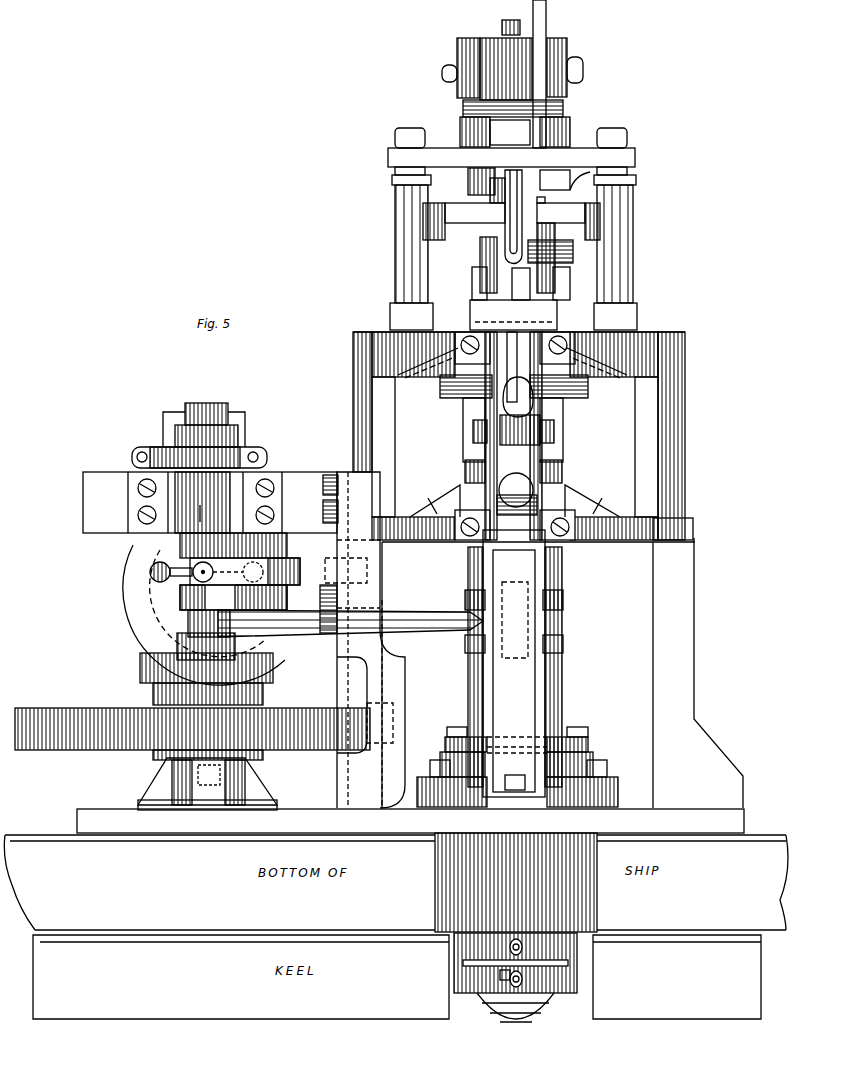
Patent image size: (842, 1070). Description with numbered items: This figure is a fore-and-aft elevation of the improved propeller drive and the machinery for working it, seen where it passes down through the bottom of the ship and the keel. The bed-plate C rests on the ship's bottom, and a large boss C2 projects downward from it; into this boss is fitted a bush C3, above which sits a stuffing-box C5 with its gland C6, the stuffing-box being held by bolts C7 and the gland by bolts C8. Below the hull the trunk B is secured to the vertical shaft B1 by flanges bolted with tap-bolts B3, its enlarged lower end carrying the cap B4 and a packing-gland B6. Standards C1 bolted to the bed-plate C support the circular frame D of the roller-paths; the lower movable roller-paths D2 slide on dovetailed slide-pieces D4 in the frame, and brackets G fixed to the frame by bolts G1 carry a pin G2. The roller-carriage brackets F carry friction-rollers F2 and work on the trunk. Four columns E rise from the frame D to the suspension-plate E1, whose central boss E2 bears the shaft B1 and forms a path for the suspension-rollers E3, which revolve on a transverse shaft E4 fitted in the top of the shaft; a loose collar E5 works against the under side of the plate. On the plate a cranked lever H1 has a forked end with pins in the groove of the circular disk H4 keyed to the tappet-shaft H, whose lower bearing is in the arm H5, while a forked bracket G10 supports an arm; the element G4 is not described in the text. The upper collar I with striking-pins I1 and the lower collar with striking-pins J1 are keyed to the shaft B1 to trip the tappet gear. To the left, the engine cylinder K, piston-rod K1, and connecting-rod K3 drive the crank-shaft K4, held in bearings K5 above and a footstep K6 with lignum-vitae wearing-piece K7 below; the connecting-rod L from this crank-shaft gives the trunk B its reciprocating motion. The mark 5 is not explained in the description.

The cranked lever H1 is at (524, 74).
The vertical shaft B1 is at (513, 77).
The suspension-rollers E3 is at (512, 68).
The transverse shaft E4 is at (583, 70).
The central boss E2 is at (515, 132).
The suspension-plate E1 is at (511, 151).
The columns E is at (513, 252).
The loose collar E5 is at (473, 181).
The forked bracket G10 is at (565, 180).
The upper collar I is at (515, 213).
The striking-pins I1 is at (511, 222).
The tappet-shaft H is at (545, 209).
The forked rod G4 is at (506, 217).
The circular disk H4 is at (550, 251).
The arm H5 is at (524, 284).
The striking-pins J1 is at (520, 276).
The circular frame D is at (519, 436).
The bolts G1 is at (515, 519).
The lower movable roller-paths D2 is at (512, 432).
The dovetailed slide-pieces D4 is at (515, 500).
The trunk B is at (566, 680).
The brackets G is at (517, 423).
The roller-carriage brackets F is at (514, 410).
The pin G2 is at (554, 432).
The friction-rollers F2 is at (572, 474).
The standards C1 is at (433, 640).
The connecting-rod L is at (350, 623).
The bolts C8 is at (517, 723).
The gland C6 is at (445, 742).
The stuffing-box C5 is at (600, 757).
The bolts C7 is at (518, 767).
The bush C3 is at (618, 795).
The connecting-rod K3 is at (199, 468).
The pin 5 is at (196, 517).
The cylinder K is at (145, 558).
The piston-rod K1 is at (225, 571).
The crank-shaft K4 is at (232, 622).
The bearings K5 is at (192, 706).
The footstep K6 is at (207, 784).
The wearing-piece K7 is at (209, 780).
The bed-plate C is at (410, 821).
The boss C2 is at (516, 882).
The tap-bolts B3 is at (515, 963).
The cap B4 is at (499, 979).
The packing-gland B6 is at (495, 1012).